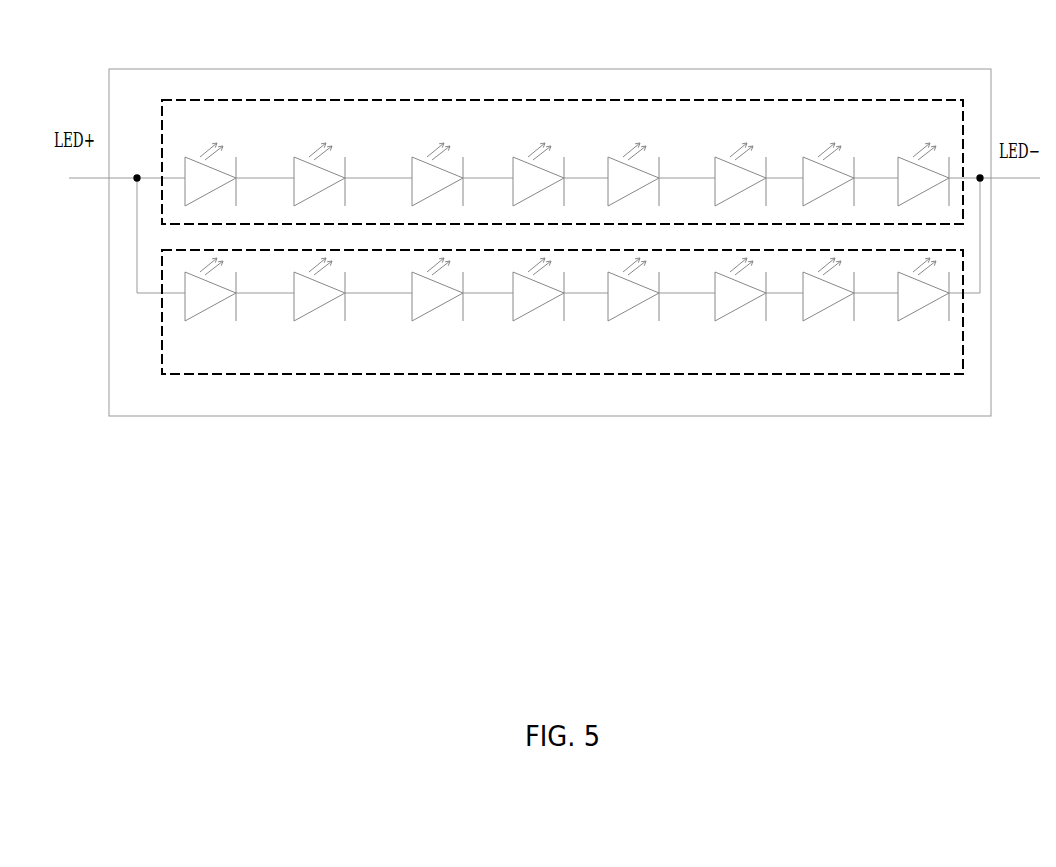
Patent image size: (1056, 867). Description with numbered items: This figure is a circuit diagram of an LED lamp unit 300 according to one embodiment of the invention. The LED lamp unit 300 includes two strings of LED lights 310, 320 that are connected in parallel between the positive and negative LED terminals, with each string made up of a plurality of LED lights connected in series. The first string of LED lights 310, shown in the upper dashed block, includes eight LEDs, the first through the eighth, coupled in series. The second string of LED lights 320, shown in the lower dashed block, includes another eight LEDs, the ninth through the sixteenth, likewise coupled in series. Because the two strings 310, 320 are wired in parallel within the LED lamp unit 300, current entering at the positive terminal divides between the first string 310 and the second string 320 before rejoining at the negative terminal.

The LED lamp unit 300 is at (655, 68).
The first string of LED lights 310 is at (813, 98).
The second string of LED lights 320 is at (800, 374).